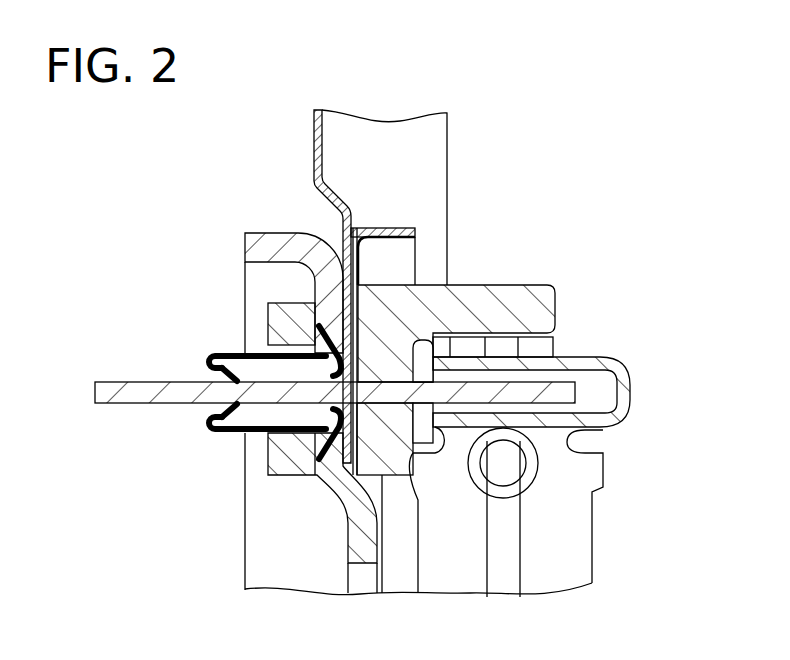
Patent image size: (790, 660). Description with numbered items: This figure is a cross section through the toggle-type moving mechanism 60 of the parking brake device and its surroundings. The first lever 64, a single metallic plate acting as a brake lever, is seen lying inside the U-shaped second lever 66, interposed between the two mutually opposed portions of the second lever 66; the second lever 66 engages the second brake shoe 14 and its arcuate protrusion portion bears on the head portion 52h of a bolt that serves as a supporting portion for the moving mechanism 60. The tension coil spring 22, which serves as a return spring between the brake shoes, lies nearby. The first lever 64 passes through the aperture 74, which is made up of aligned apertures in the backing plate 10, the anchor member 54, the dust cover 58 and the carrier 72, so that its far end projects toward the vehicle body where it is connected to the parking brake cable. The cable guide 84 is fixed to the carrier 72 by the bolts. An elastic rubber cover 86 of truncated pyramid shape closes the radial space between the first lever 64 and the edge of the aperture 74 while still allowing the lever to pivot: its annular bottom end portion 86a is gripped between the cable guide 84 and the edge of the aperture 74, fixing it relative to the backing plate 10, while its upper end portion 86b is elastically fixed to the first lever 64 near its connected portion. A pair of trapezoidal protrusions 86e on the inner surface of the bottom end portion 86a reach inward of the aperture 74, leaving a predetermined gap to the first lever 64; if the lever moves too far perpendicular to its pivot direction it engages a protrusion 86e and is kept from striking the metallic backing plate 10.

The backing plate 10 is at (353, 262).
The second brake shoe 14 is at (577, 578).
The tension coil spring 22 is at (525, 483).
The head portion 52h is at (427, 350).
The anchor member 54 is at (543, 303).
The dust cover 58 is at (315, 135).
The toggle-type moving mechanism 60 is at (618, 335).
The first lever 64 is at (165, 396).
The second lever 66 is at (632, 391).
The carrier 72 is at (262, 242).
The aperture 74 is at (392, 432).
The cable guide 84 is at (290, 465).
The cover 86 is at (213, 334).
The annular bottom end portion 86a is at (325, 322).
The upper end portion 86b is at (225, 374).
The protrusions 86e is at (318, 416).